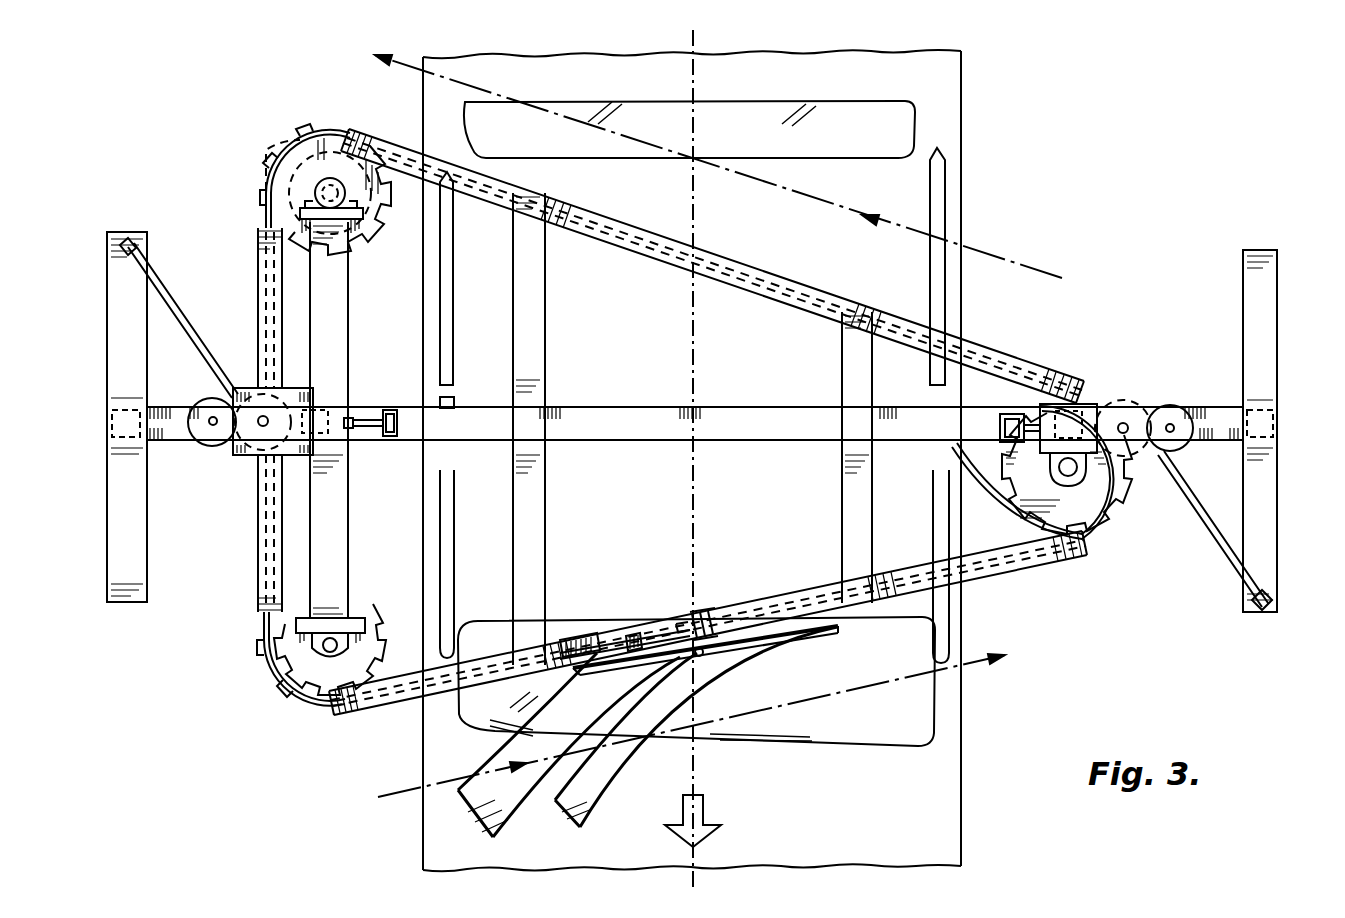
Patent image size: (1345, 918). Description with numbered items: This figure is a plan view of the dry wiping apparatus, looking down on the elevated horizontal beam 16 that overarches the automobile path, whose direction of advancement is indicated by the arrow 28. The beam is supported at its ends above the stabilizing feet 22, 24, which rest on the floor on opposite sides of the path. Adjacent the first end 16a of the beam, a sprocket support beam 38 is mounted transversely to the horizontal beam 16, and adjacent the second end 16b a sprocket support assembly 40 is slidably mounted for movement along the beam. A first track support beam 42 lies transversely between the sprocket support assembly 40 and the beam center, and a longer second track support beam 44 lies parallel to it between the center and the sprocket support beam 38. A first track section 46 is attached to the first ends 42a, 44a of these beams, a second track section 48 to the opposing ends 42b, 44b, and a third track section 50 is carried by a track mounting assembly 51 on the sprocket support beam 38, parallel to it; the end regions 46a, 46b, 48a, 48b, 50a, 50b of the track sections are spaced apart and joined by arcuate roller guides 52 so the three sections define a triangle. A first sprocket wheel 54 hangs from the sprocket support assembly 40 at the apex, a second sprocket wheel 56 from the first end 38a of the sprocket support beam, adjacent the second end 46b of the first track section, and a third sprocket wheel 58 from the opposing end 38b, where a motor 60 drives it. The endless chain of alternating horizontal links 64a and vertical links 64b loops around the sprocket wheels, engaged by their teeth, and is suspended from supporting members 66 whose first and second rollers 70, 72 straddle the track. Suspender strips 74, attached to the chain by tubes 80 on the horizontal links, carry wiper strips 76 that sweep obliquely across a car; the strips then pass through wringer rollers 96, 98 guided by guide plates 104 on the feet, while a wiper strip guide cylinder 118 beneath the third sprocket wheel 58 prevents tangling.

The horizontal beam 16 is at (610, 442).
The first end of horizontal beam 16a is at (165, 441).
The second end of horizontal beam 16b is at (1215, 407).
The stabilizing foot 22 is at (107, 475).
The stabilizing foot 24 is at (1280, 482).
The arrow 28 is at (700, 812).
The sprocket support beam 38 is at (349, 345).
The first end of sprocket support beam 38a is at (338, 605).
The second end of sprocket support beam 38b is at (355, 240).
The sprocket support assembly 40 is at (1068, 420).
The first track support beam 42 is at (842, 508).
The first end of first track support beam 42a is at (884, 578).
The second end of first track support beam 42b is at (845, 320).
The second track support beam 44 is at (546, 354).
The first end of second track support beam 44a is at (516, 645).
The second end of second track support beam 44b is at (548, 196).
The first track section 46 is at (1022, 565).
The right end of arm 46 46a is at (1080, 565).
The second end of first track section 46b is at (343, 716).
The second track section 48 is at (798, 275).
The right end of arm 48 48a is at (1085, 375).
The left end of arm 48 48b is at (362, 135).
The third track section 50 is at (258, 516).
The lower track end 50a is at (258, 612).
The upper track end 50b is at (258, 232).
The track mounting assembly 51 is at (300, 386).
The arcuate roller guides 52 is at (1112, 545).
The first sprocket wheel 54 is at (1120, 510).
The second sprocket wheel 56 is at (305, 703).
The third sprocket wheel 58 is at (318, 133).
The motor 60 is at (368, 225).
The horizontally oriented links 64a is at (575, 640).
The vertically oriented links 64b is at (630, 636).
The supporting members 66 is at (688, 615).
The first roller 70 is at (702, 615).
The second roller 72 is at (703, 655).
The suspender strips 74 is at (780, 662).
The wiper strips 76 is at (606, 810).
The tube 80 is at (840, 628).
The roller 96 is at (1170, 405).
The roller 98 is at (255, 395).
The guide plate 104 is at (1228, 574).
The wiper strip guide cylinder 118 is at (259, 185).